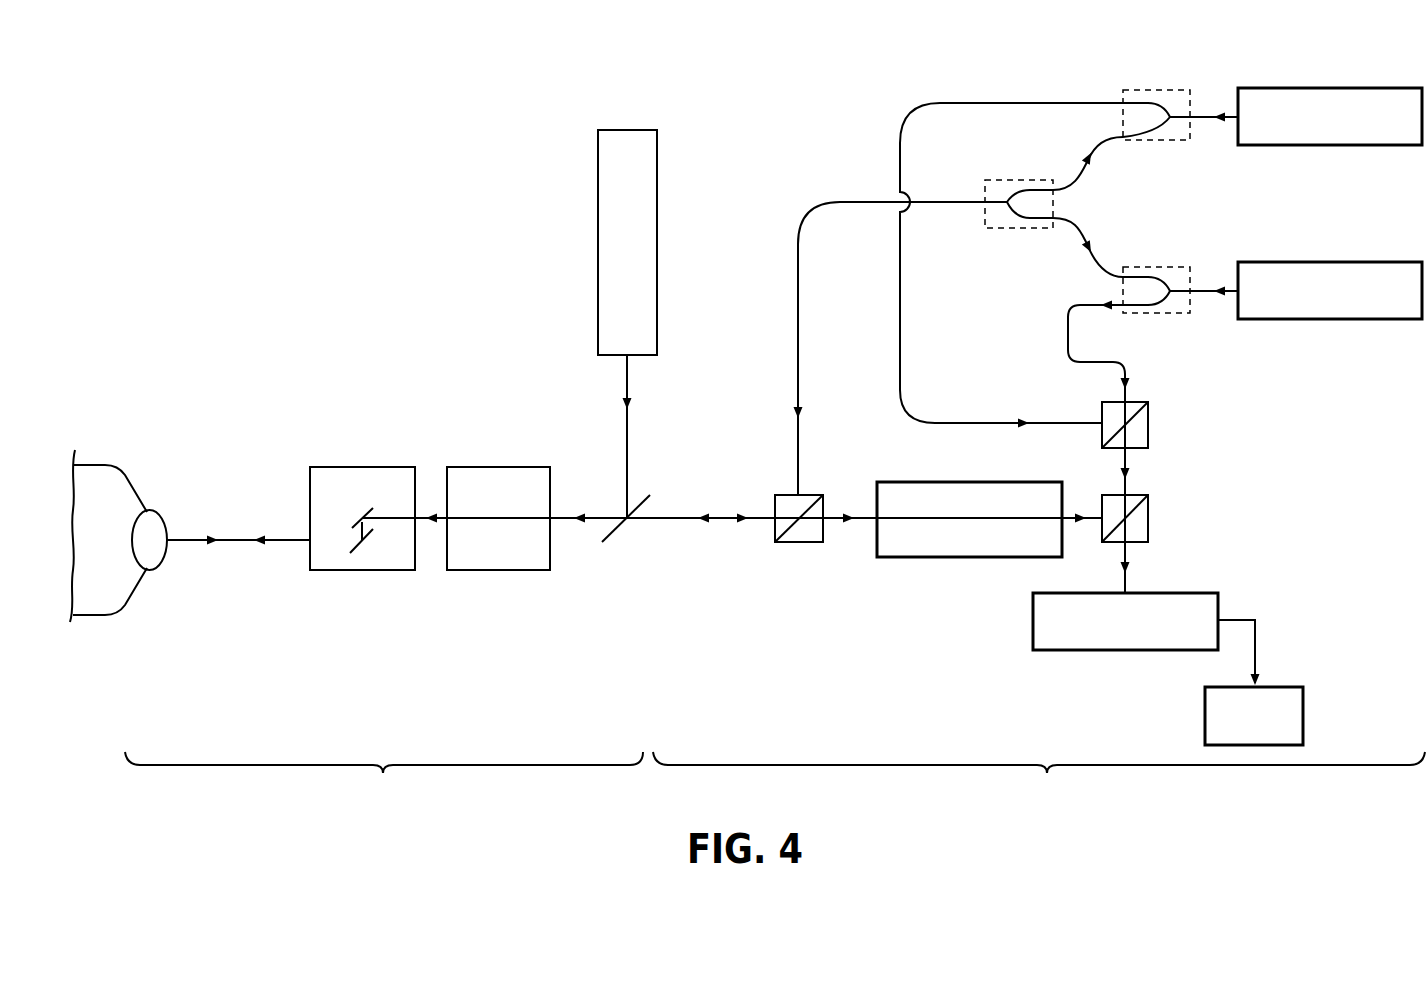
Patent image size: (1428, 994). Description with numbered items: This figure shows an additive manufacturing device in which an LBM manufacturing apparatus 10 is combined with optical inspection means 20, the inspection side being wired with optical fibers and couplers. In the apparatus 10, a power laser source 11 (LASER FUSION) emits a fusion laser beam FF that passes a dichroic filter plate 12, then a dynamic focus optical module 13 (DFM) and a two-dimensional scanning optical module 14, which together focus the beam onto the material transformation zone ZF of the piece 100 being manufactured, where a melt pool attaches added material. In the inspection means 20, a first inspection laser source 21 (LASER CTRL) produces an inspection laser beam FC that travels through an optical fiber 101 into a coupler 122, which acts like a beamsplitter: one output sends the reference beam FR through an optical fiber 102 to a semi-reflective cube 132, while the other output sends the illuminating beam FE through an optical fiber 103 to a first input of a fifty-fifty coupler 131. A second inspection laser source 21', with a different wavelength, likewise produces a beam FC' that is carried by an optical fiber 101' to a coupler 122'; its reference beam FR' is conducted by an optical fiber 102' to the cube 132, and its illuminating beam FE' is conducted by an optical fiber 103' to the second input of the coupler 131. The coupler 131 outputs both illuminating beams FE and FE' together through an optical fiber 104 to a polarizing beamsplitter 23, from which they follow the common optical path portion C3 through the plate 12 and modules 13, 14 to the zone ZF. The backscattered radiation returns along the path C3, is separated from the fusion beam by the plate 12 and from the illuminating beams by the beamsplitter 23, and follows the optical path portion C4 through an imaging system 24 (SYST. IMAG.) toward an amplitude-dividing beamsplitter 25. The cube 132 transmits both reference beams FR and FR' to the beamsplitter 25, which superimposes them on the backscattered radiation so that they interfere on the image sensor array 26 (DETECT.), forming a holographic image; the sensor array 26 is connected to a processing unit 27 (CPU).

The piece being manufactured 100 is at (105, 615).
The material transformation zone ZF is at (155, 567).
The two-dimensional optical scanning module 14 is at (343, 570).
The optical module with variable focusing distance 13 is at (480, 572).
The dichroic filter plate 12 is at (610, 533).
The power laser source 11 is at (598, 212).
The optical path portion C3 is at (710, 491).
The optical path portion C4 is at (850, 488).
The second polarizing beamsplitter 23 is at (795, 543).
The imaging system 24 is at (968, 557).
The amplitude-dividing beamsplitter 25 is at (1148, 508).
The semi-reflective cube 132 is at (1148, 423).
The image sensor array 26 is at (1078, 650).
The CPU 27 is at (1303, 708).
The inspection laser source 21 is at (1330, 87).
The second inspection laser source 21' is at (1330, 263).
The optical fiber 101 is at (1210, 63).
The optical fiber 101' is at (1212, 235).
The coupler 122 is at (1162, 87).
The coupler 122' is at (1164, 260).
The optical fiber 103 is at (1029, 186).
The optical fiber 103' is at (1122, 203).
The 50/50 coupler 131 is at (1003, 228).
The optical fiber 102 is at (1011, 236).
The optical fiber 102' is at (1058, 352).
The optical fiber 104 is at (880, 202).
The LBM manufacturing apparatus 10 is at (384, 779).
The optical inspection means 20 is at (1039, 778).
The fusion laser beam FF is at (623, 403).
The illuminating beam FE is at (1082, 150).
The second illuminating beam FE' is at (1079, 258).
The reference beam FR is at (1109, 71).
The second reference beam FR' is at (1135, 335).
The inspection laser beam FC is at (1229, 86).
The control beam FC' is at (1234, 259).